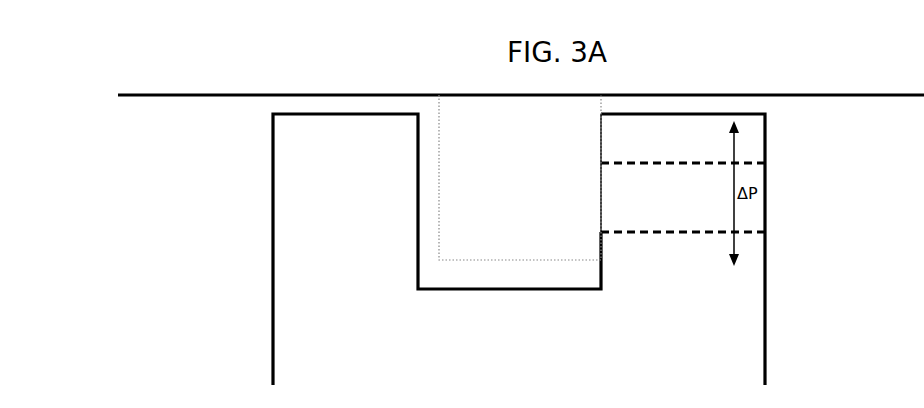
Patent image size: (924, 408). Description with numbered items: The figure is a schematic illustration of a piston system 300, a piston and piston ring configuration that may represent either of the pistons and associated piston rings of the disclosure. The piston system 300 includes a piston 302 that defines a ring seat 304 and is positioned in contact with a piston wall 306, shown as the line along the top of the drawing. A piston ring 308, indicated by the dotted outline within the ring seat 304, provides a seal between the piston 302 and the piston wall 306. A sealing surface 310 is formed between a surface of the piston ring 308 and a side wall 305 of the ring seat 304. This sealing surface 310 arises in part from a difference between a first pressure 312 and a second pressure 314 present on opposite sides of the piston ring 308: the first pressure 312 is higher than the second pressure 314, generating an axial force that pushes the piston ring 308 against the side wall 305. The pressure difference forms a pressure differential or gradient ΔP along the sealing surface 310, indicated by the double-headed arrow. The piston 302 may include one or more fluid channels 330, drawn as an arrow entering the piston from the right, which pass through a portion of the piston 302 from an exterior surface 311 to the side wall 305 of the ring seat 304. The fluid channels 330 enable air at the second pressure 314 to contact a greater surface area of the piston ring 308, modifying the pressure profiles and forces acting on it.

The piston system 300 is at (222, 240).
The piston 302 is at (767, 366).
The ring seat 304 is at (502, 277).
The side wall 305 is at (601, 269).
The piston wall 306 is at (838, 95).
The piston ring 308 is at (522, 119).
The sealing surface 310 is at (617, 120).
The exterior surface 311 is at (767, 243).
The first pressure 312 is at (218, 133).
The second pressure 314 is at (823, 132).
The fluid channels 330 is at (781, 203).